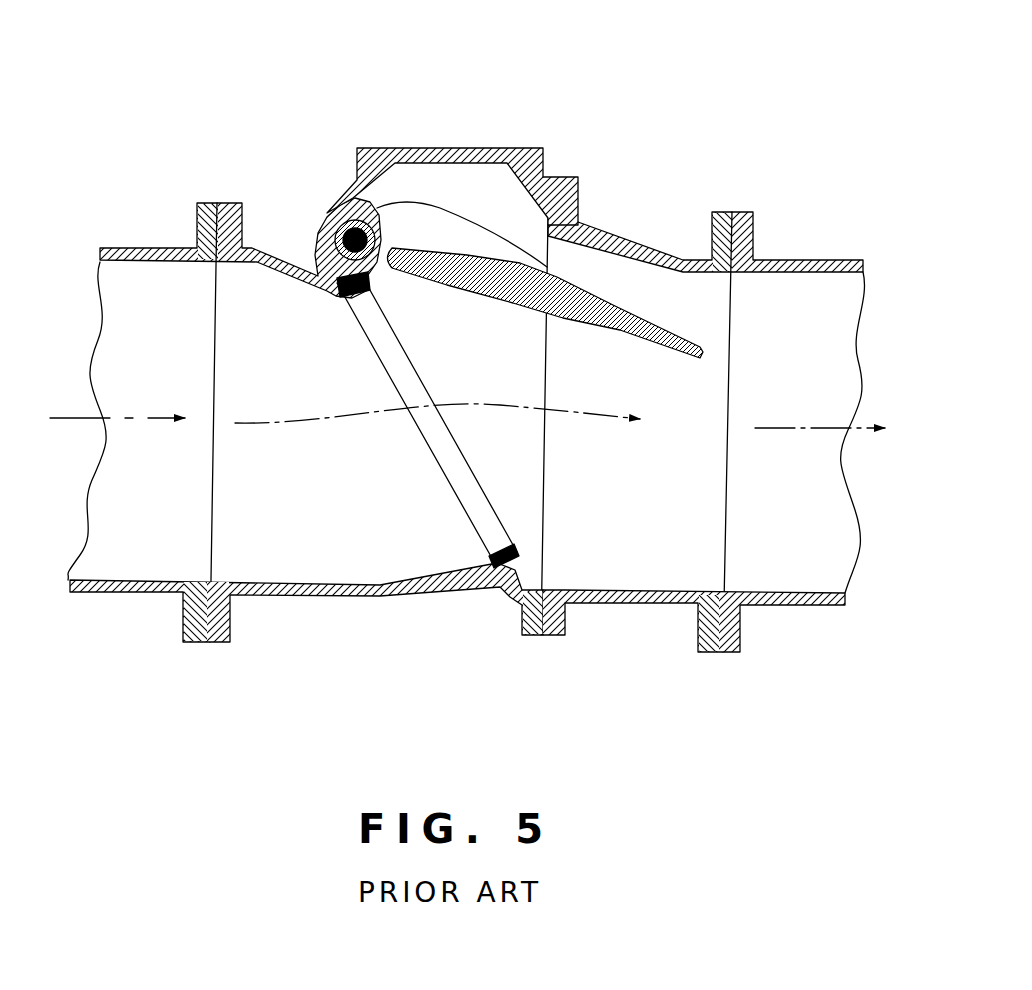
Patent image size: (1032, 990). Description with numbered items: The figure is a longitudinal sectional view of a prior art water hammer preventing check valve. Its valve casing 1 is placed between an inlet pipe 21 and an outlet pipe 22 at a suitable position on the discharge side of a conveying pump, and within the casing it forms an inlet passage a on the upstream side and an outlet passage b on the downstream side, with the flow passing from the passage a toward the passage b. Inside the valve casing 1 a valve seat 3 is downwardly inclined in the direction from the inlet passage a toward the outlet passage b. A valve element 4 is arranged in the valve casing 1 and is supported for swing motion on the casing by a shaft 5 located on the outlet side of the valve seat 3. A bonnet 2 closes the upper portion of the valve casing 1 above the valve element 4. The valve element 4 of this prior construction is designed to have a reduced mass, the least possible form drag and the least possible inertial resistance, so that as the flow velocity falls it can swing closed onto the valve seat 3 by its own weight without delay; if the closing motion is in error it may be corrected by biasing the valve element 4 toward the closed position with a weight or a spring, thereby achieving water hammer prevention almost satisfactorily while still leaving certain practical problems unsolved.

The valve casing 1 is at (352, 195).
The bonnet 2 is at (472, 148).
The valve seat 3 is at (503, 587).
The valve element 4 is at (567, 263).
The shaft 5 is at (327, 223).
The inlet pipe 21 is at (153, 588).
The outlet pipe 22 is at (767, 603).
The inlet passage a is at (260, 405).
The outlet passage b is at (693, 423).